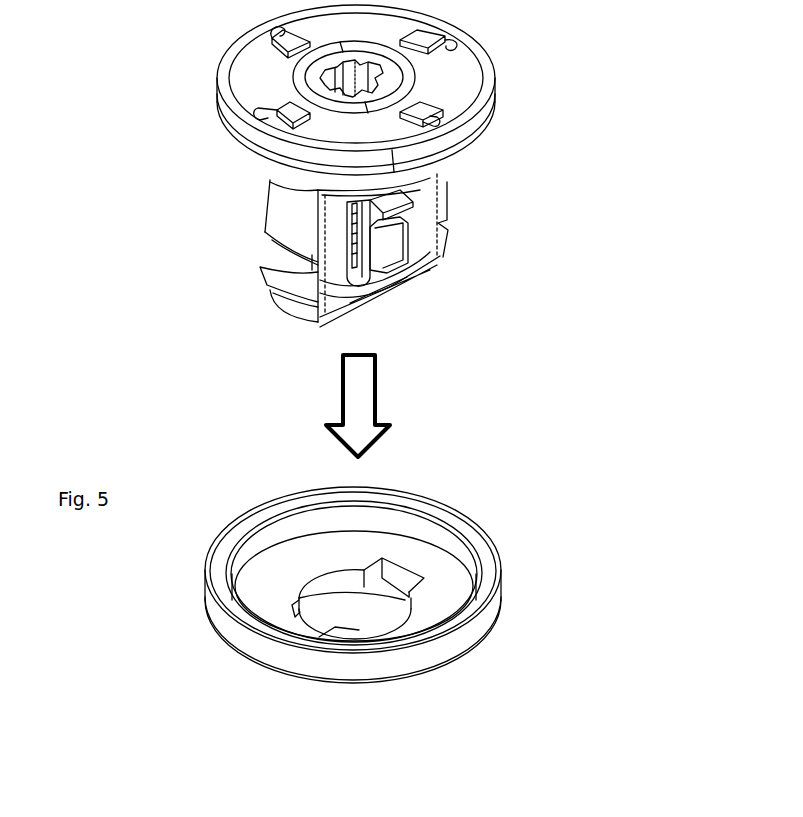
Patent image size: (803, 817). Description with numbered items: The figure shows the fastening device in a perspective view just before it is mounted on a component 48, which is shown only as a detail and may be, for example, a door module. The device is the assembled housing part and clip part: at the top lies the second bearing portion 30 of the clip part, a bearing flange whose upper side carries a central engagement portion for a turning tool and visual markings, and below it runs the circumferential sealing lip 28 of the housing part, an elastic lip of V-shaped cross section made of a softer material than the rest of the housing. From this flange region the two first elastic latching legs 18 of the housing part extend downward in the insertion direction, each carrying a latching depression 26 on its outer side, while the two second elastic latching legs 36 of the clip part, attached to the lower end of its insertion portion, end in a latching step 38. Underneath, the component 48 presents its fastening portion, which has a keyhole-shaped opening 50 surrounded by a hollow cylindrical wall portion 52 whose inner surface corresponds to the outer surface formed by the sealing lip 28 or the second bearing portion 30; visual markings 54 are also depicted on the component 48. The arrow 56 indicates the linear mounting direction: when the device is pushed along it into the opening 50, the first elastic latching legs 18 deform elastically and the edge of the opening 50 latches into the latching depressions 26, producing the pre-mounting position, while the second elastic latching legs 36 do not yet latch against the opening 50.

The first elastic latching legs 18 is at (272, 203).
The latching depression 26 is at (280, 253).
The sealing lip 28 is at (468, 146).
The second bearing portion 30 is at (243, 66).
The second elastic latching legs 36 is at (398, 238).
The latching step 38 is at (400, 207).
The component 48 is at (410, 591).
The opening 50 is at (339, 577).
The hollow cylindrical wall portion 52 is at (252, 643).
The visual markings 54 is at (250, 508).
The arrow 56 is at (373, 382).